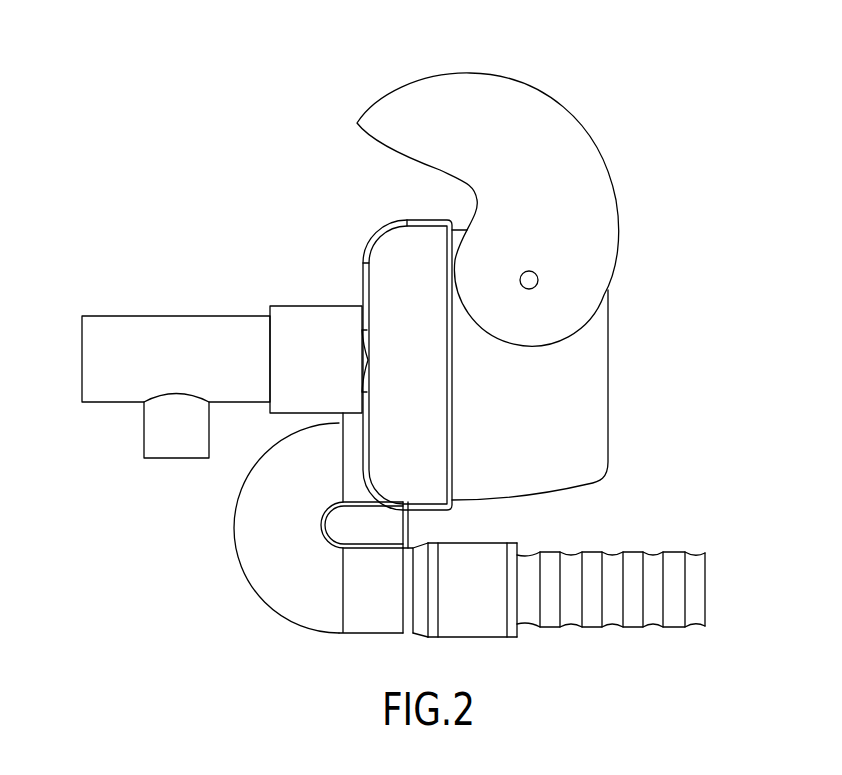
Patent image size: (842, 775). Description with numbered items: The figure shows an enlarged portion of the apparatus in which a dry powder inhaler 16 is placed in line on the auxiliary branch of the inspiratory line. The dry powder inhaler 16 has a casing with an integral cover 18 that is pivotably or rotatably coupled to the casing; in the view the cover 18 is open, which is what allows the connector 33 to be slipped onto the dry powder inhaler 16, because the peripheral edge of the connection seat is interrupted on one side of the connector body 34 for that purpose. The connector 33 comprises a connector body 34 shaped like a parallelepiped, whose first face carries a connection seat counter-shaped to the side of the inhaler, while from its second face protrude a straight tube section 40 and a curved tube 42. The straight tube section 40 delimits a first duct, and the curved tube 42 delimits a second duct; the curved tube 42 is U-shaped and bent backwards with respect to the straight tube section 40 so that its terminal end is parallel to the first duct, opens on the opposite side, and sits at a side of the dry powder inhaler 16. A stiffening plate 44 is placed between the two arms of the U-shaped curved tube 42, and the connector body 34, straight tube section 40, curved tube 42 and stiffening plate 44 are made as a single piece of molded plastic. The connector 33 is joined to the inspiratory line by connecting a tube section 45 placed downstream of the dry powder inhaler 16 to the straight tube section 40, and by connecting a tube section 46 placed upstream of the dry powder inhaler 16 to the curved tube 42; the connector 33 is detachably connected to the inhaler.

The dry powder inhaler 16 is at (643, 452).
The cover 18 is at (595, 165).
The connector 33 is at (343, 220).
The connector body 34 is at (397, 195).
The straight tube section 40 is at (305, 322).
The curved tube 42 is at (253, 505).
The stiffening plate 44 is at (366, 530).
The tube section 45 is at (140, 327).
The tube section 46 is at (648, 627).